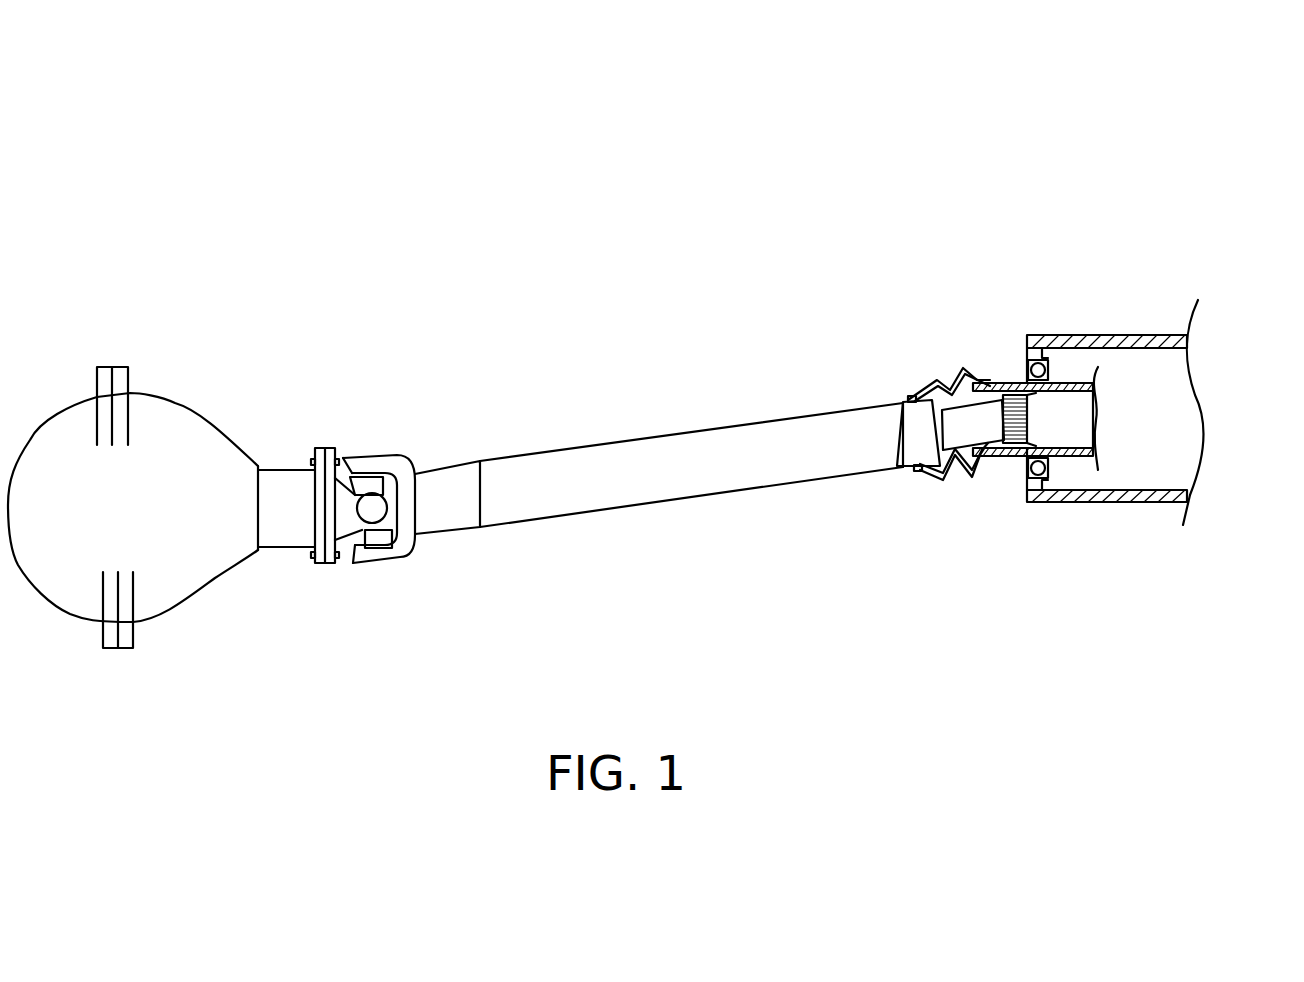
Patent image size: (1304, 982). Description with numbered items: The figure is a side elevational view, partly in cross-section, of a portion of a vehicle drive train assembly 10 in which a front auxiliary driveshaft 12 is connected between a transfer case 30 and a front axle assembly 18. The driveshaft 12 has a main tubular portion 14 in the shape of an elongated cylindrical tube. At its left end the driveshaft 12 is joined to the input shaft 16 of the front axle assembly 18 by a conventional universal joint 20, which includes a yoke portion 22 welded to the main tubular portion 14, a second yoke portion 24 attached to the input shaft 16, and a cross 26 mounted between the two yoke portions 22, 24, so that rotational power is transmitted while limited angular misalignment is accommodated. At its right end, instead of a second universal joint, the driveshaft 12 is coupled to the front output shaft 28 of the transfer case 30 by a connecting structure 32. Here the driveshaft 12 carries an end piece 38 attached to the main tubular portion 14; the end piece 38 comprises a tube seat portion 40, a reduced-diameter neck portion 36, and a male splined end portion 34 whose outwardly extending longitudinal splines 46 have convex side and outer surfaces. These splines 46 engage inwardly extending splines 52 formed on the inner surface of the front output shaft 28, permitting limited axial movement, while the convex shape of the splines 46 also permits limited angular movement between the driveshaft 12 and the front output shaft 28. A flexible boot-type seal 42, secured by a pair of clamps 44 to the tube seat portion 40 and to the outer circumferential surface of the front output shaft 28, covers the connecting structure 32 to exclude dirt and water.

The drive train assembly 10 is at (168, 192).
The front auxiliary driveshaft 12 is at (623, 455).
The main tubular portion 14 is at (707, 447).
The input shaft 16 is at (277, 490).
The front axle assembly 18 is at (163, 427).
The universal joint 20 is at (355, 395).
The yoke portion 22 is at (376, 456).
The second yoke portion 24 is at (346, 515).
The cross 26 is at (388, 540).
The front output shaft 28 is at (1080, 383).
The transfer case 30 is at (1135, 341).
The connecting structure 32 is at (933, 305).
The male splined end portion 34 is at (1003, 380).
The neck portion 36 is at (940, 380).
The end piece 38 is at (967, 415).
The tube seat portion 40 is at (917, 437).
The seal 42 is at (985, 465).
The clamps 44 is at (908, 397).
The splines 46 is at (1010, 455).
The inwardly extending splines 52 is at (1112, 419).